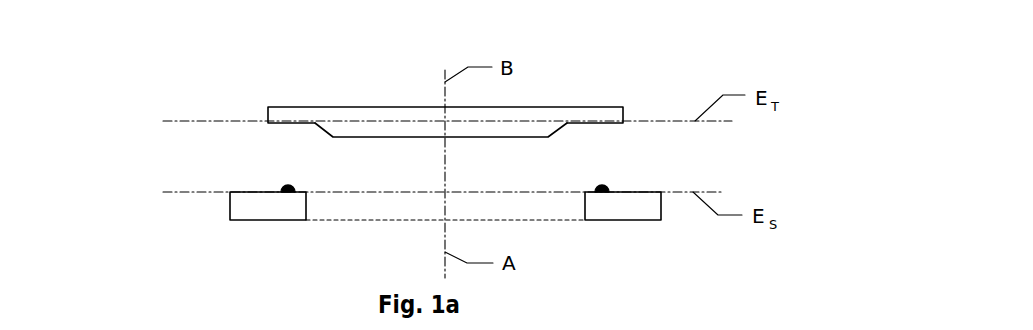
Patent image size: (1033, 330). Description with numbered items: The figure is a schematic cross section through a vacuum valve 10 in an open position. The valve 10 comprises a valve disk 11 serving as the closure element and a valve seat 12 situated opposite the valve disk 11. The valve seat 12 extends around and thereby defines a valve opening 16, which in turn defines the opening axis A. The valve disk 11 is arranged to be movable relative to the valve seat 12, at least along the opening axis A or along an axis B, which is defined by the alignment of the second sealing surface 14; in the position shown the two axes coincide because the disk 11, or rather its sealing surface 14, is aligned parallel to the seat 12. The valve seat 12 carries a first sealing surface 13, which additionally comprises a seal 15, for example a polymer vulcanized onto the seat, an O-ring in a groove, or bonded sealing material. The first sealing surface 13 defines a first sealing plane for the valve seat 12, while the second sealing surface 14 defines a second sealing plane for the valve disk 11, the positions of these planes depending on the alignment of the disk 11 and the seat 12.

The vacuum valve 10 is at (120, 128).
The valve disk 11 is at (405, 113).
The valve seat 12 is at (272, 210).
The first sealing surface 13 is at (627, 177).
The second sealing surface 14 is at (618, 140).
The seal 15 is at (283, 187).
The valve opening 16 is at (398, 209).